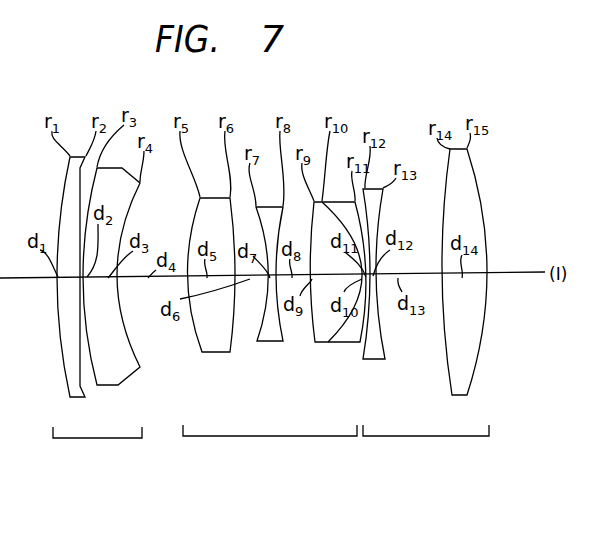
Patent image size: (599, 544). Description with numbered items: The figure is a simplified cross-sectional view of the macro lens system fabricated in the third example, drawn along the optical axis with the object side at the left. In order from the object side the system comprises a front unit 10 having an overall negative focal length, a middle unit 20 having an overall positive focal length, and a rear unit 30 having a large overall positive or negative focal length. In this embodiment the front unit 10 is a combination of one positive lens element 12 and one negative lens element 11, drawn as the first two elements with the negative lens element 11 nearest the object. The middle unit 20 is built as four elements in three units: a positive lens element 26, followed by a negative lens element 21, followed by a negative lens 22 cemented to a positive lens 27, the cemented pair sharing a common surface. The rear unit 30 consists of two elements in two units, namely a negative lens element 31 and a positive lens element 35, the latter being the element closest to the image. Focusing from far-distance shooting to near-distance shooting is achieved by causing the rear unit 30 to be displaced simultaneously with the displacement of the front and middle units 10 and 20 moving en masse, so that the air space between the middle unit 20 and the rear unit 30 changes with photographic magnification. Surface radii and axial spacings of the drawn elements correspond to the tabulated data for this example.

The front unit 10 is at (89, 462).
The middle unit 20 is at (270, 460).
The rear unit 30 is at (426, 460).
The negative lens element 11 is at (75, 398).
The positive lens element 12 is at (118, 386).
The positive lens element 26 is at (214, 353).
The negative lens element 21 is at (268, 342).
The negative lens 22 is at (322, 343).
The positive lens 27 is at (343, 343).
The negative lens element 31 is at (372, 360).
The positive lens element 35 is at (453, 397).